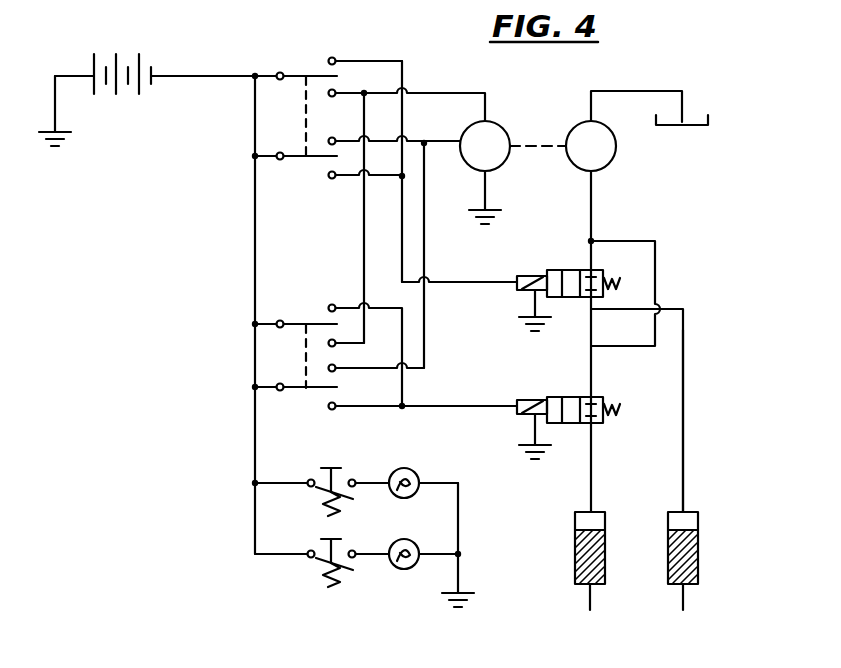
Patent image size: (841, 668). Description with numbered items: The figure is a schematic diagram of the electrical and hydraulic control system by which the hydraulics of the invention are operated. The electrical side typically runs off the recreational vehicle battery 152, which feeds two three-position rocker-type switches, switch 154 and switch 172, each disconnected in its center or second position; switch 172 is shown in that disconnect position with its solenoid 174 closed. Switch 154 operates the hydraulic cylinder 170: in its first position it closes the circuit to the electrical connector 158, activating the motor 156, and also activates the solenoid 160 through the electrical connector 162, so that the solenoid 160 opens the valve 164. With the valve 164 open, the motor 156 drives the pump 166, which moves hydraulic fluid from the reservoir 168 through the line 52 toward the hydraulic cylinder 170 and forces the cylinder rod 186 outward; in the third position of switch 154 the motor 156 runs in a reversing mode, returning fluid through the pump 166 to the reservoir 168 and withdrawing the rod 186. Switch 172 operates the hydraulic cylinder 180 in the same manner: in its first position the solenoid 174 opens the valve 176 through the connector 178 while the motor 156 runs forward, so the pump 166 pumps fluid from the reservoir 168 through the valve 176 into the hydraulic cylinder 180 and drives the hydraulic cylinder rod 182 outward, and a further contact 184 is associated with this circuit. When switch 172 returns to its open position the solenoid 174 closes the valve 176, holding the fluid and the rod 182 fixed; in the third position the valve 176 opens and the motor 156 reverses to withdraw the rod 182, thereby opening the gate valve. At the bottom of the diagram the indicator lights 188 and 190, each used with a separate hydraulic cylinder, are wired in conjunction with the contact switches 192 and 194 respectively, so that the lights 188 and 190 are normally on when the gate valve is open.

The hydraulic line 52 is at (685, 418).
The battery 152 is at (93, 62).
The switch 154 is at (305, 131).
The motor 156 is at (500, 124).
The electrical connector 158 is at (347, 140).
The solenoid 160 is at (532, 276).
The electrical connector 162 is at (365, 61).
The valve 164 is at (596, 270).
The pump 166 is at (616, 156).
The reservoir 168 is at (697, 122).
The hydraulic cylinder 170 is at (698, 530).
The switch 172 is at (305, 369).
The solenoid 174 is at (536, 400).
The valve 176 is at (598, 397).
The connector 178 is at (349, 281).
The hydraulic cylinder 180 is at (605, 514).
The hydraulic cylinder rod 182 is at (590, 604).
The switch contact 184 is at (348, 405).
The cylinder rod 186 is at (683, 604).
The indicator light 188 is at (412, 468).
The indicator light 190 is at (403, 539).
The contact switch 192 is at (320, 490).
The contact switch 194 is at (320, 562).